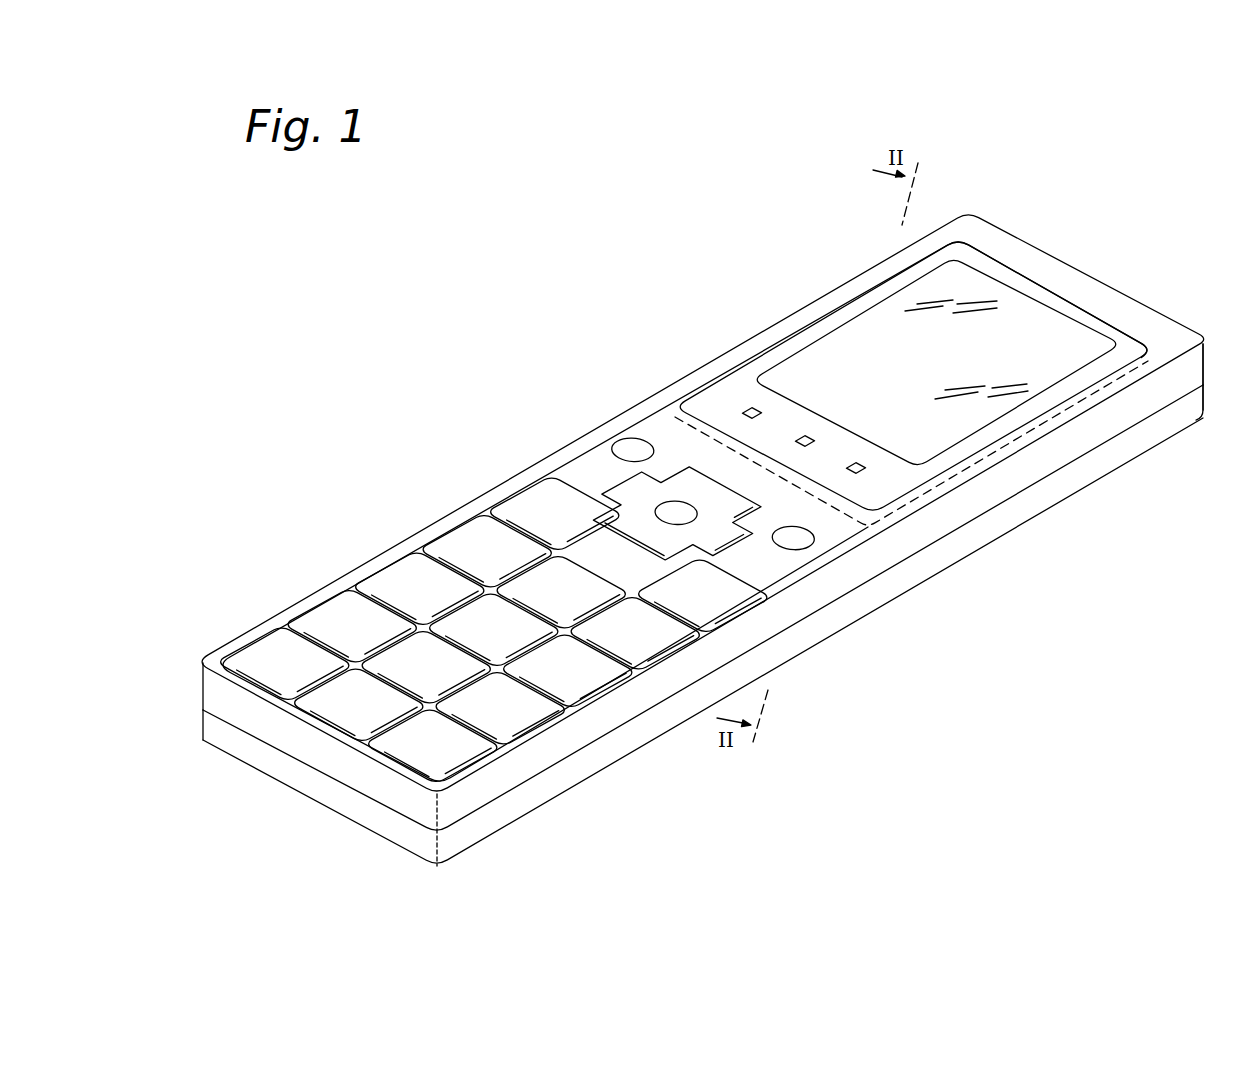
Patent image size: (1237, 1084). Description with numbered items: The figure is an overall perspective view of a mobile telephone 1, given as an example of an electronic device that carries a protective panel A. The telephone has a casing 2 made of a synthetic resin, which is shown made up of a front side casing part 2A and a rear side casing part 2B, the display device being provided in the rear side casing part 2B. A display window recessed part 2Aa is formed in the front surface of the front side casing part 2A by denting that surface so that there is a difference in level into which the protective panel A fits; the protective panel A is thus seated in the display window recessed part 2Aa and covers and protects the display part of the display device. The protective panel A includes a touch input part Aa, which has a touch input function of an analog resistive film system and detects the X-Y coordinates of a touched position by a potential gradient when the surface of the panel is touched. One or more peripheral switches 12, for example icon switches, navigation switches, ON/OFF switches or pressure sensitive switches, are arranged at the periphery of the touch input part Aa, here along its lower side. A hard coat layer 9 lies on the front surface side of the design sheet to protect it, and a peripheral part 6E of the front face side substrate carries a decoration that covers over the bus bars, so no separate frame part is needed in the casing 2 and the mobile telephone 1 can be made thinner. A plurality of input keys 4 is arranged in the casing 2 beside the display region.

The mobile telephone 1 is at (530, 372).
The casing 2 is at (977, 593).
The front side casing part 2A is at (850, 572).
The rear side casing part 2B is at (813, 632).
The display window recessed part 2Aa is at (872, 325).
The input keys 4 is at (462, 550).
The hard coat layer 9 is at (957, 280).
The protective panel A is at (1019, 256).
The touch input part Aa is at (1055, 338).
The peripheral part of the front face side substrate 6E is at (1113, 333).
The peripheral switch 12 is at (866, 464).